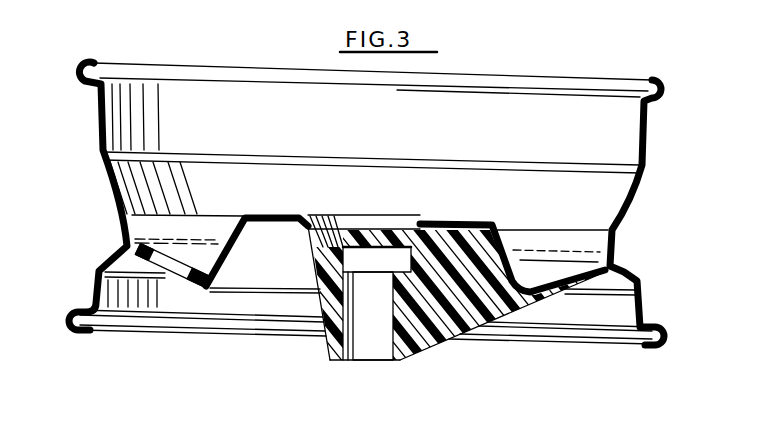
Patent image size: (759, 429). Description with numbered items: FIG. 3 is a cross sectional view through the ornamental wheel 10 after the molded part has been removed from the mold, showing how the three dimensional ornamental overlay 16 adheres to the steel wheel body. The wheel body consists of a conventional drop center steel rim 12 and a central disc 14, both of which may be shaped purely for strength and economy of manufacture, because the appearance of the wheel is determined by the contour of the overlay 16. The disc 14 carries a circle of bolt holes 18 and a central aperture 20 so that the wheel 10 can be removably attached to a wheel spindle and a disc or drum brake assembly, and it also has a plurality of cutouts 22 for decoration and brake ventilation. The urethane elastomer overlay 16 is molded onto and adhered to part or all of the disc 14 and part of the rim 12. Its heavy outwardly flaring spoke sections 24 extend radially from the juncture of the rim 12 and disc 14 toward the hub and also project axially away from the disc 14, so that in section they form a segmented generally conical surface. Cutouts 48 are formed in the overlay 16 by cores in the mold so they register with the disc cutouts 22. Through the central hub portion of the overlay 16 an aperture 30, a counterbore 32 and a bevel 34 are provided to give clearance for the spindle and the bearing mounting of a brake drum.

The ornamental wheel 10 is at (90, 157).
The drop center steel rim 12 is at (115, 195).
The central disc 14 is at (503, 242).
The ornamental overlay 16 is at (442, 356).
The bolt holes 18 is at (279, 213).
The central aperture 20 is at (380, 222).
The cutouts 22 is at (160, 256).
The spoke sections 24 is at (481, 327).
The aperture 30 is at (366, 349).
The counterbore 32 is at (323, 262).
The bevel 34 is at (337, 222).
The cutouts 48 is at (162, 252).